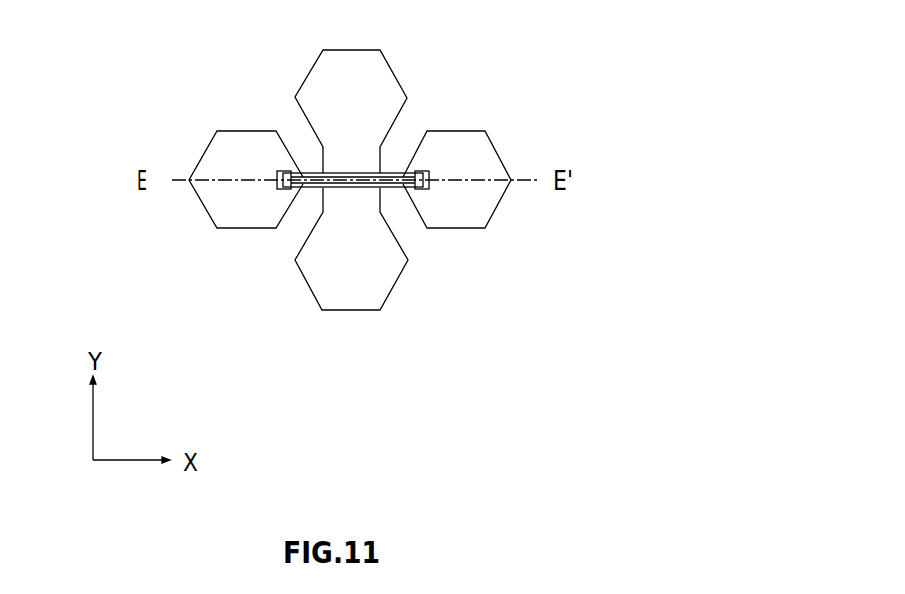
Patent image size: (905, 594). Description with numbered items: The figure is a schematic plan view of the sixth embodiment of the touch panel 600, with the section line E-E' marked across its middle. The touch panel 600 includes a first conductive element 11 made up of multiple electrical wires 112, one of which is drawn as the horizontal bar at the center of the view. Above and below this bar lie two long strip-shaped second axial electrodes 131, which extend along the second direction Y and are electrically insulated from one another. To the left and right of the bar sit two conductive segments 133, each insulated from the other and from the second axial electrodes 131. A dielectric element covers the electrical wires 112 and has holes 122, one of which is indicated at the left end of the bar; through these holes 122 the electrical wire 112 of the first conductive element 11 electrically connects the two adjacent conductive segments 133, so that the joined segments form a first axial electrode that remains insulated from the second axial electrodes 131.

The touch panel 600 is at (73, 60).
The second axial electrode 131 is at (374, 48).
The conductive segment 133 is at (493, 143).
The hole 122 is at (283, 171).
The electrical wire 112 is at (383, 185).
The first conductive element 11 is at (402, 226).